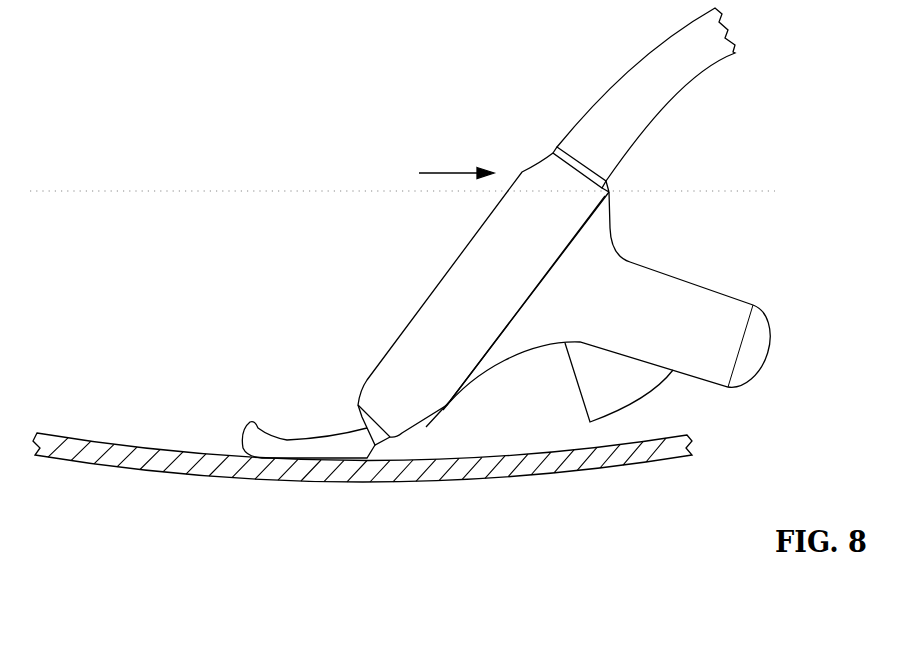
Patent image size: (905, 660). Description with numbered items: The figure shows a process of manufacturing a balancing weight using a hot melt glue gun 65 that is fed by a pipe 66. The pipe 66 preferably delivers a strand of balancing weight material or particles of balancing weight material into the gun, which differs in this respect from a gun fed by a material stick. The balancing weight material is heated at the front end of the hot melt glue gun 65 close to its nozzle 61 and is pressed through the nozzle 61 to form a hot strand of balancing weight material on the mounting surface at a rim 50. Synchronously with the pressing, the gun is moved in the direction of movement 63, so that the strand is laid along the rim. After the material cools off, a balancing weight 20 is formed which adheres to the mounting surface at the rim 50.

The balancing weight 20 is at (281, 450).
The mounting surface at a rim 50 is at (383, 470).
The nozzle 61 is at (363, 428).
The direction of movement 63 is at (448, 173).
The hot melt glue gun 65 is at (447, 300).
The pipe 66 is at (607, 117).